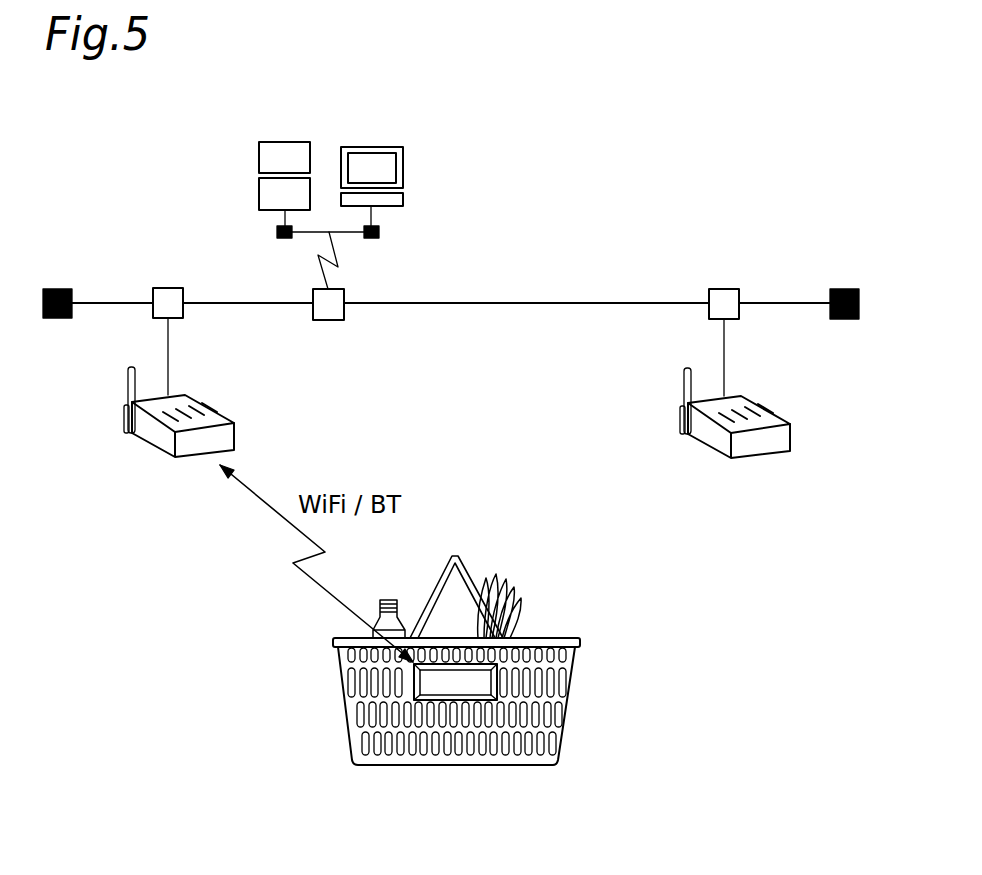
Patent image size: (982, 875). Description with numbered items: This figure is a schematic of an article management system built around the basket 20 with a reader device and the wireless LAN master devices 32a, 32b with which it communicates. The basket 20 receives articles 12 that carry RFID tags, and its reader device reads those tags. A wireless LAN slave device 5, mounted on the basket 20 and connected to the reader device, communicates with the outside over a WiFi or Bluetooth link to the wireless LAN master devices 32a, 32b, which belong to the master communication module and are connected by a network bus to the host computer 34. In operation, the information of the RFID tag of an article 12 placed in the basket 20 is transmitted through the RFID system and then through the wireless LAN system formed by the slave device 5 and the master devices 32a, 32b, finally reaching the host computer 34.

The host computer 34 is at (403, 167).
The wireless LAN master device 32a is at (217, 408).
The wireless LAN master device 32b is at (773, 410).
The article 12 is at (517, 588).
The wireless LAN slave device 5 is at (453, 682).
The basket with a reader device 20 is at (582, 752).